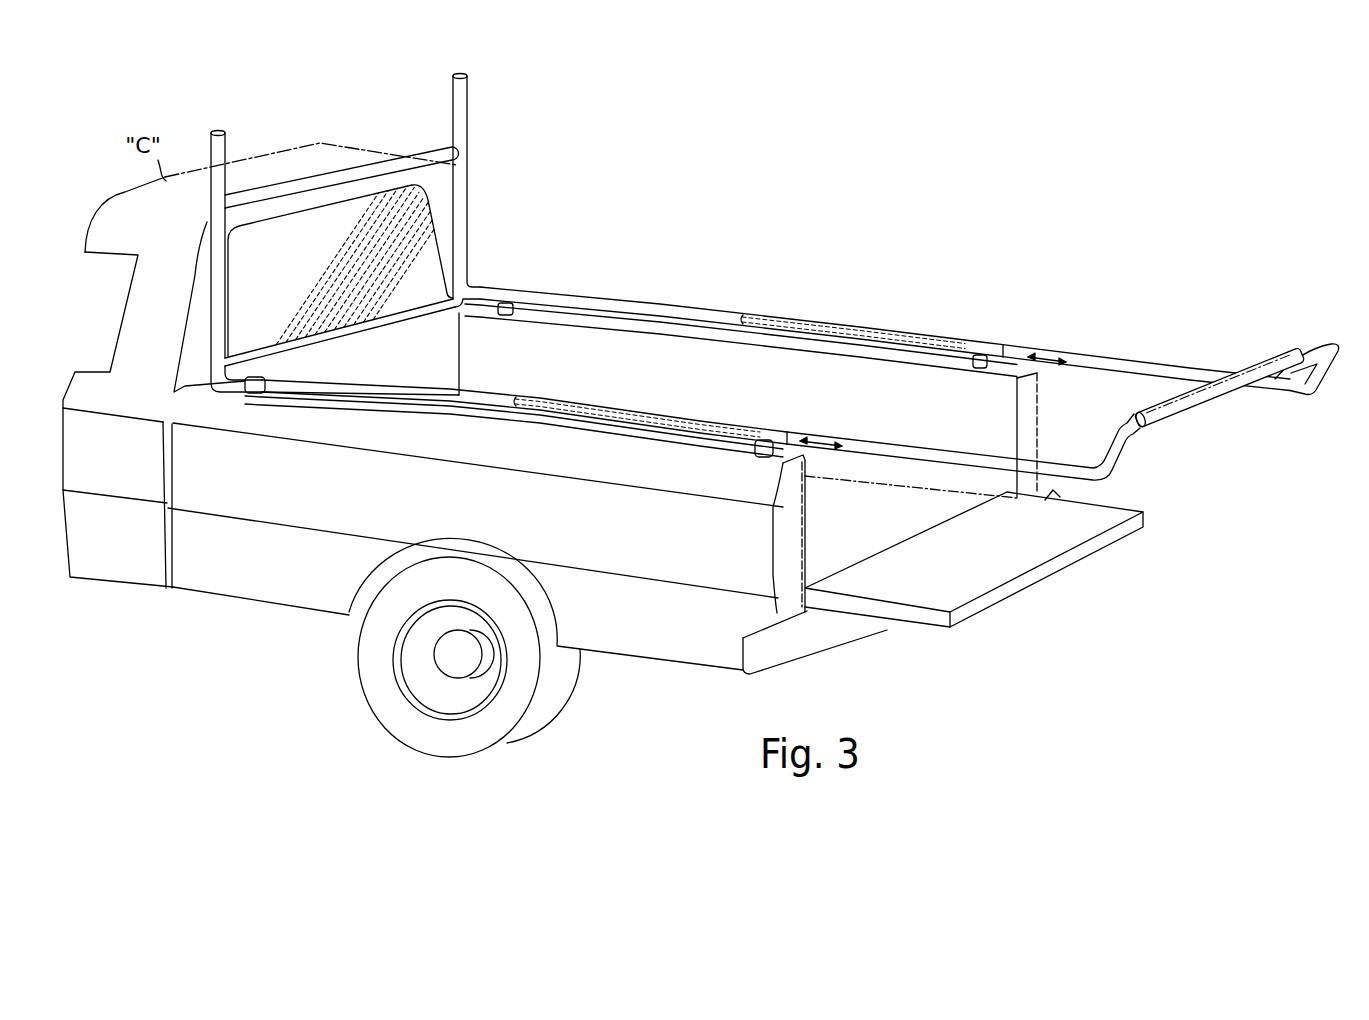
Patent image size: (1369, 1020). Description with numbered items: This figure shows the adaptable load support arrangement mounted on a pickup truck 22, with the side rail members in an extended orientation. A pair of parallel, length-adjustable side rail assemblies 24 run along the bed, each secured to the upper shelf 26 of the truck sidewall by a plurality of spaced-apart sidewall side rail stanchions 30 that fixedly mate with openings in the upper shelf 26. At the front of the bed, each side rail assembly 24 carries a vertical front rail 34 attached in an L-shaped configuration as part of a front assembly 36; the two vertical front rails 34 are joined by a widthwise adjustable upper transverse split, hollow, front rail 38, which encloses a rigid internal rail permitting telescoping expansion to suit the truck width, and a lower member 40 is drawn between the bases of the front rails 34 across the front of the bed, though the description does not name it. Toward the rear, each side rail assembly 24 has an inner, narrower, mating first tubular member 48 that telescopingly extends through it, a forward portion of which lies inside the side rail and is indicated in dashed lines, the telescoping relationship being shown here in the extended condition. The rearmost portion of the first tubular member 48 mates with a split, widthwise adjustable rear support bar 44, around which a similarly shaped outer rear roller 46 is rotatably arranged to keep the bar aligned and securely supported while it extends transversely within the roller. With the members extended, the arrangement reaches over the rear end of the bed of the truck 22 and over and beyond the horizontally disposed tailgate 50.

The pickup truck 22 is at (561, 450).
The side rail assembly 24 is at (685, 307).
The upper shelf 26 is at (656, 322).
The sidewall side rail stanchion 30 is at (248, 388).
The vertical front rail 34 is at (212, 208).
The front assembly 36 is at (347, 233).
The upper transverse split front rail 38 is at (420, 153).
The lower cross bar 40 is at (360, 333).
The adjustable rear support bar 44 is at (1326, 356).
The outer rear roller 46 is at (1264, 374).
The first tubular member 48 is at (1103, 366).
The tailgate 50 is at (1028, 578).